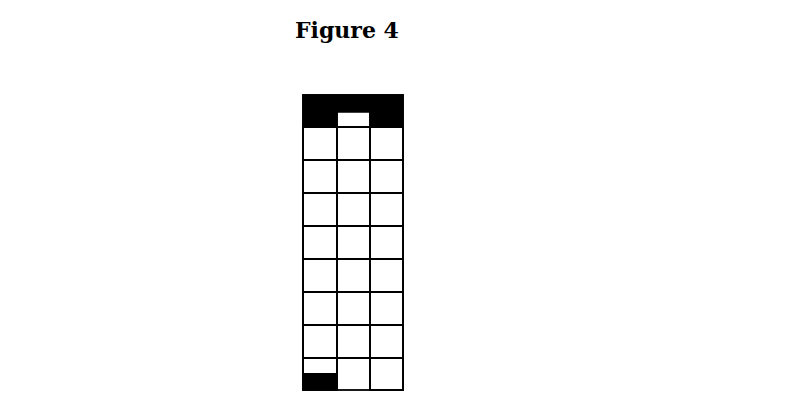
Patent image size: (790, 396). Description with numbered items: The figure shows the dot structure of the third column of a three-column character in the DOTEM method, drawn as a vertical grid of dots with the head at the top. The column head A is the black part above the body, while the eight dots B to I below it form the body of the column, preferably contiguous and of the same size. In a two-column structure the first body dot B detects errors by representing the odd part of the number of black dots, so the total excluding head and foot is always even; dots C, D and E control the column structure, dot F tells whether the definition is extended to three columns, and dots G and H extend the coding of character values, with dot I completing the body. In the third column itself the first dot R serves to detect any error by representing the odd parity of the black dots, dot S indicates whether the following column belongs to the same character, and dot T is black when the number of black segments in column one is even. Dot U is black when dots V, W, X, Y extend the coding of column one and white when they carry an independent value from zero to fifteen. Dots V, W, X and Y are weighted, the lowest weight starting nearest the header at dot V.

The column head A is at (281, 92).
The first body dot B is at (293, 144).
The second body dot C is at (303, 177).
The third body dot D is at (293, 210).
The fourth body dot E is at (303, 243).
The fifth body dot F is at (293, 276).
The sixth body dot G is at (303, 308).
The seventh body dot H is at (293, 342).
The eighth body dot I is at (303, 374).
The first dot of third column R is at (413, 144).
The second dot of third column S is at (403, 177).
The third dot of third column T is at (413, 210).
The fourth dot of third column U is at (403, 243).
The fifth dot of third column V is at (413, 276).
The sixth dot of third column W is at (403, 308).
The seventh dot of third column X is at (413, 342).
The eighth dot of third column Y is at (403, 374).